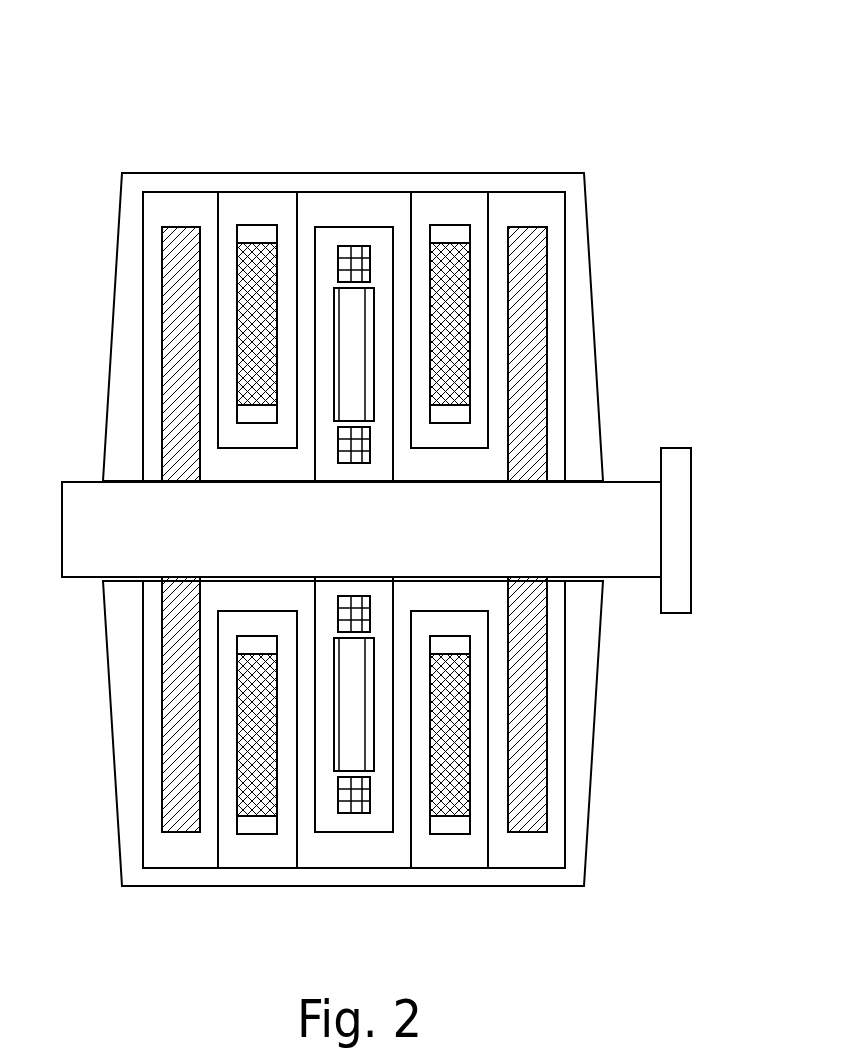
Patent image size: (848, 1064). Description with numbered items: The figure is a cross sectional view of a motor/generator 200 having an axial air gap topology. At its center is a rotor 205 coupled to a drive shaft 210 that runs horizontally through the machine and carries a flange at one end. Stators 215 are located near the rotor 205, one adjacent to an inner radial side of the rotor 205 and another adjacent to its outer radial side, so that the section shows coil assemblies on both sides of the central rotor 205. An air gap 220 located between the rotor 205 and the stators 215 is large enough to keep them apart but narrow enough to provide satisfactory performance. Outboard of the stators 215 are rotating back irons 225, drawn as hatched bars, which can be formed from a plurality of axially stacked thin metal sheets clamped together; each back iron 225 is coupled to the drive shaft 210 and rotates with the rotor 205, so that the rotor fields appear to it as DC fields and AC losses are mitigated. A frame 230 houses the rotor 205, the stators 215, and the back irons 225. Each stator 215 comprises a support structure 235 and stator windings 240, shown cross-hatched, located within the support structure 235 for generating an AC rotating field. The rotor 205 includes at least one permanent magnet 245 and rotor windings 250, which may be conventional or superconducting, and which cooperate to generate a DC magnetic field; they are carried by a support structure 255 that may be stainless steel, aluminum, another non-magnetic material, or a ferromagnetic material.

The motor/generator 200 is at (533, 53).
The rotor 205 is at (357, 206).
The drive shaft 210 is at (680, 540).
The stator 215 is at (502, 208).
The air gap 220 is at (400, 852).
The rotating back iron 225 is at (172, 272).
The frame 230 is at (583, 375).
The support structure 235 is at (227, 640).
The stator windings 240 is at (258, 735).
The permanent magnet 245 is at (355, 733).
The rotor windings 250 is at (347, 805).
The support structure 255 is at (363, 823).